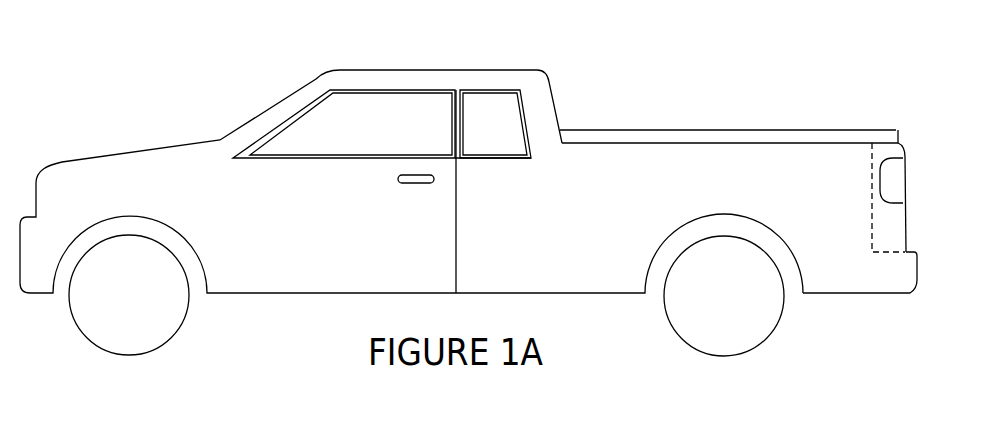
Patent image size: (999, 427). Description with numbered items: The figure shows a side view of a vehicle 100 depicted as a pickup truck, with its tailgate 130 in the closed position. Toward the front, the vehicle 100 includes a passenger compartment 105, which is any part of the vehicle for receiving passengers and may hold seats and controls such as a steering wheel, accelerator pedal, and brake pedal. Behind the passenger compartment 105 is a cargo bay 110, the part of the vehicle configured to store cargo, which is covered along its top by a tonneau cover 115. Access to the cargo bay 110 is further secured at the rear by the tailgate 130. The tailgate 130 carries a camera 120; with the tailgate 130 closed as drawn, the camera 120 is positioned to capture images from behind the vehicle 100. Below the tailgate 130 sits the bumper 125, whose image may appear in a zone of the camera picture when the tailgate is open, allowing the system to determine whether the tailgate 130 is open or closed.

The vehicle 100 is at (687, 110).
The passenger compartment 105 is at (322, 123).
The cargo bay 110 is at (823, 143).
The tonneau cover 115 is at (648, 130).
The camera 120 is at (906, 210).
The bumper 125 is at (917, 280).
The tailgate 130 is at (905, 149).